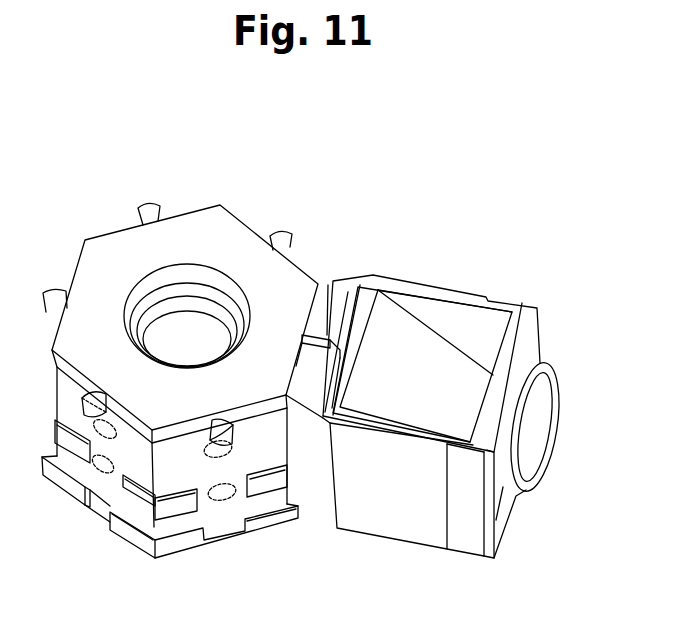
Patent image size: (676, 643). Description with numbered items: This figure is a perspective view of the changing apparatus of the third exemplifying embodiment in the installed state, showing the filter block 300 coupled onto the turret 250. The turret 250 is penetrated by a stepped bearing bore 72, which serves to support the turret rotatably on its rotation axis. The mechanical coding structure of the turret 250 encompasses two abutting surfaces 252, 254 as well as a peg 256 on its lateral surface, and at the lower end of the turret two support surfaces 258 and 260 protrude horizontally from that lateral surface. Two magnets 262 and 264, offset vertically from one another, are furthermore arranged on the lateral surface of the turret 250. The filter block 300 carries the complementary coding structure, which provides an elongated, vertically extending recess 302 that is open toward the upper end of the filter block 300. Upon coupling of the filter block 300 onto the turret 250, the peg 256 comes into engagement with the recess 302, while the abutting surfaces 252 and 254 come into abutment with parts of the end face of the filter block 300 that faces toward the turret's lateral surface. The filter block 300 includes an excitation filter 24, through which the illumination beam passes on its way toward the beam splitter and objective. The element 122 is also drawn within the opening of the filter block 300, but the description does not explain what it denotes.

The turret 250 is at (182, 192).
The bearing bore 72 is at (176, 333).
The peg 256 is at (222, 420).
The magnet 262 is at (210, 451).
The magnet 264 is at (228, 488).
The abutting surface 252 is at (165, 505).
The support surface 258 is at (173, 532).
The support surface 260 is at (278, 508).
The abutting surface 254 is at (278, 480).
The filter block 300 is at (545, 250).
The lens panel 122 is at (445, 350).
The recess 302 is at (336, 345).
The excitation filter 24 is at (545, 419).